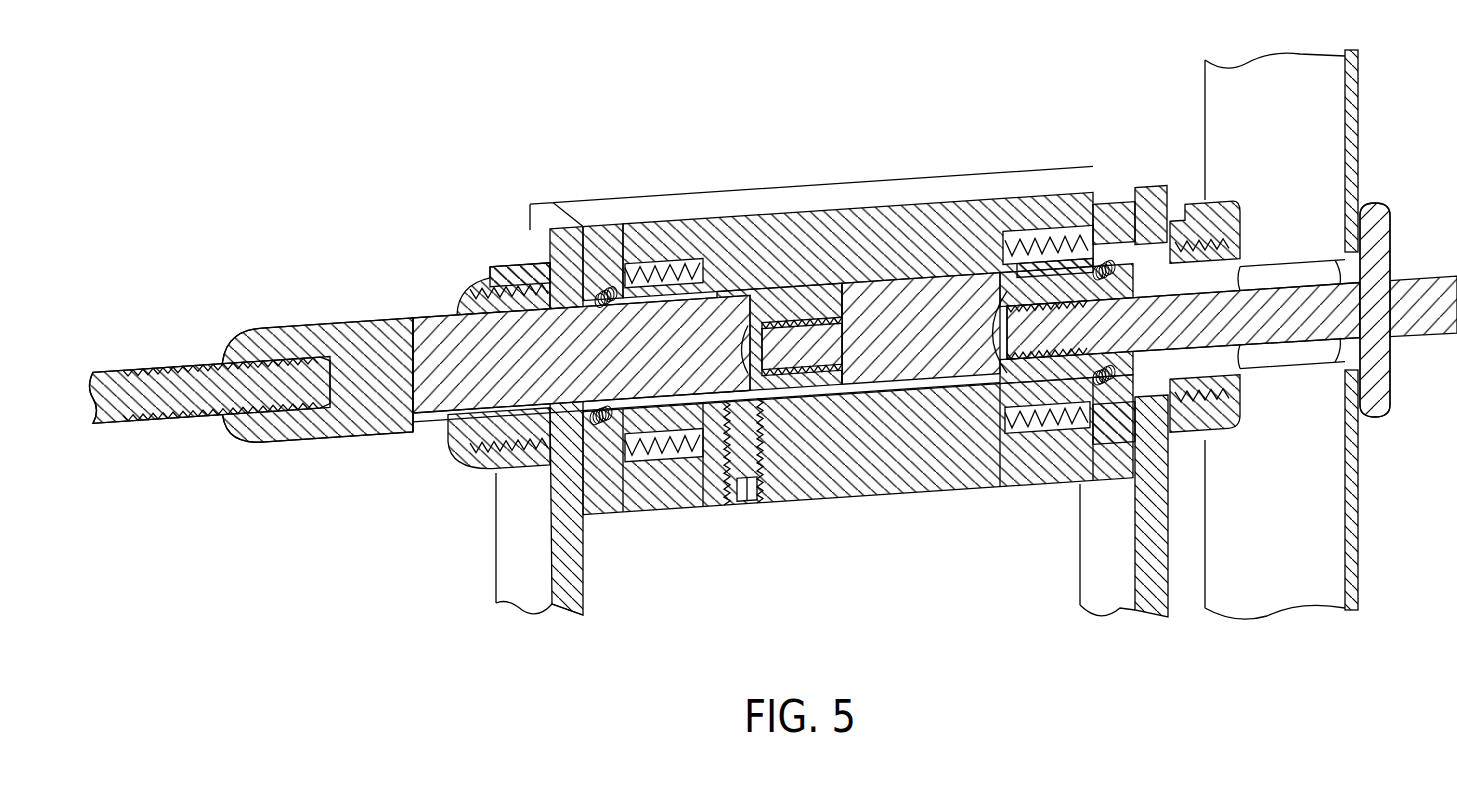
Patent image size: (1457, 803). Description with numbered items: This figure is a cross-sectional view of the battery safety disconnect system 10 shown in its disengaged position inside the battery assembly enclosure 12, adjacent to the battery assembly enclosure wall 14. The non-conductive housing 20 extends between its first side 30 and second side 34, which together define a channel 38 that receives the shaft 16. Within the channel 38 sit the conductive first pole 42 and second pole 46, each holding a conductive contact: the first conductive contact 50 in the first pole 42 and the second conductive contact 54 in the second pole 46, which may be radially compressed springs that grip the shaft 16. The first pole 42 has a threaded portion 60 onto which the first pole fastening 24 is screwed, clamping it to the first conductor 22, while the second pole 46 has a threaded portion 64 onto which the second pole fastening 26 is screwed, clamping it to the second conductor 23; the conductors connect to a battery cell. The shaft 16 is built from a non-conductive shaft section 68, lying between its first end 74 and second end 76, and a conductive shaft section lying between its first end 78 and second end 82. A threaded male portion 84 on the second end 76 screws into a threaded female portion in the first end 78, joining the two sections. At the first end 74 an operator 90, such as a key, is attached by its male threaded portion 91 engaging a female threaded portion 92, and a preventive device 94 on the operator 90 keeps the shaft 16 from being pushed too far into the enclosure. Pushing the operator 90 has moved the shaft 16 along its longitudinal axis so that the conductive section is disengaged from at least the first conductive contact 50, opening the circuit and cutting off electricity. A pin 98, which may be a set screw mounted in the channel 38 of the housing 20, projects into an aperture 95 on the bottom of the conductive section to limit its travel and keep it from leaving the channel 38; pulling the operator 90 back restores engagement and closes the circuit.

The battery safety disconnect system 10 is at (455, 158).
The battery assembly enclosure 12 is at (1015, 85).
The battery assembly enclosure wall 14 is at (1360, 95).
The shaft 16 is at (150, 420).
The housing 20 is at (845, 188).
The first conductor 22 is at (1082, 563).
The second conductor 23 is at (583, 570).
The first pole fastening 24 is at (1235, 222).
The second pole fastening 26 is at (465, 290).
The first side 30 is at (1125, 190).
The second side 34 is at (538, 203).
The channel 38 is at (1255, 255).
The first pole 42 is at (1105, 215).
The second pole 46 is at (612, 228).
The first conductive contact 50 is at (1062, 490).
The second conductive contact 54 is at (640, 500).
The threaded portion 60 is at (1195, 232).
The threaded portion 64 is at (500, 263).
The non-conductive shaft section 68 is at (935, 400).
The first end 74 is at (1035, 400).
The second end 76 is at (800, 400).
The first end 78 is at (880, 390).
The second end 82 is at (258, 327).
The threaded male portion 84 is at (835, 385).
The operator 90 is at (1400, 300).
The male threaded portion 91 is at (995, 380).
The female threaded portion 92 is at (990, 275).
The preventive device 94 is at (1390, 395).
The aperture 95 is at (428, 420).
The pin 98 is at (770, 505).